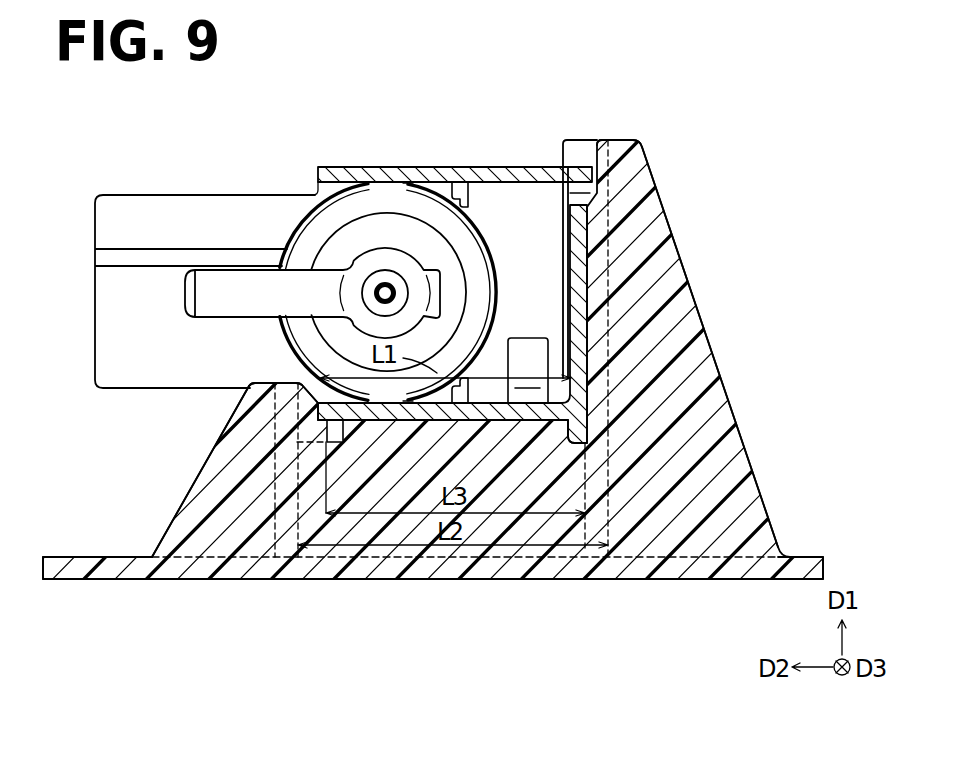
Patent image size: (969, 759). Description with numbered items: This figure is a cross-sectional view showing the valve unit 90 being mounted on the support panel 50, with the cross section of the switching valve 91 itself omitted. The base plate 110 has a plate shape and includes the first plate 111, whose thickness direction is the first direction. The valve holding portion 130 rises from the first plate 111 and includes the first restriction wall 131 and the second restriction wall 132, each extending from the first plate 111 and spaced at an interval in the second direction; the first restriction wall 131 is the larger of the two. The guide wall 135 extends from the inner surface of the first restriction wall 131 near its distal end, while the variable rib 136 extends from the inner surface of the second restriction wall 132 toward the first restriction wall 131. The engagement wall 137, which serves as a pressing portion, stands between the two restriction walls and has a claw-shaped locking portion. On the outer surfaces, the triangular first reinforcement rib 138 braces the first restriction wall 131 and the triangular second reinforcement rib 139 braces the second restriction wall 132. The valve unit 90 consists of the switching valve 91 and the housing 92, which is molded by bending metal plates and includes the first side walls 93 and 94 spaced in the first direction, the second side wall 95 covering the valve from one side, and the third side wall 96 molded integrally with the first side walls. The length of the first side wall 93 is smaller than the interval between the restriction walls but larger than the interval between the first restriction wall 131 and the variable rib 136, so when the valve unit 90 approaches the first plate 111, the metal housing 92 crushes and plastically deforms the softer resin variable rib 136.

The support panel 50 is at (492, 331).
The valve unit 90 is at (139, 187).
The switching valve 91 is at (185, 292).
The housing 92 is at (454, 296).
The first side wall 93 is at (478, 430).
The first side wall 94 is at (422, 165).
The second side wall 95 is at (578, 193).
The third side wall 96 is at (467, 207).
The base plate 110 is at (419, 528).
The first plate 111 is at (57, 557).
The valve holding portion 130 is at (492, 331).
The first restriction wall 131 is at (598, 140).
The second restriction wall 132 is at (290, 380).
The guide wall 135 is at (563, 157).
The variable rib 136 is at (320, 378).
The engagement wall 137 is at (540, 337).
The first reinforcement rib 138 is at (770, 512).
The second reinforcement rib 139 is at (205, 462).